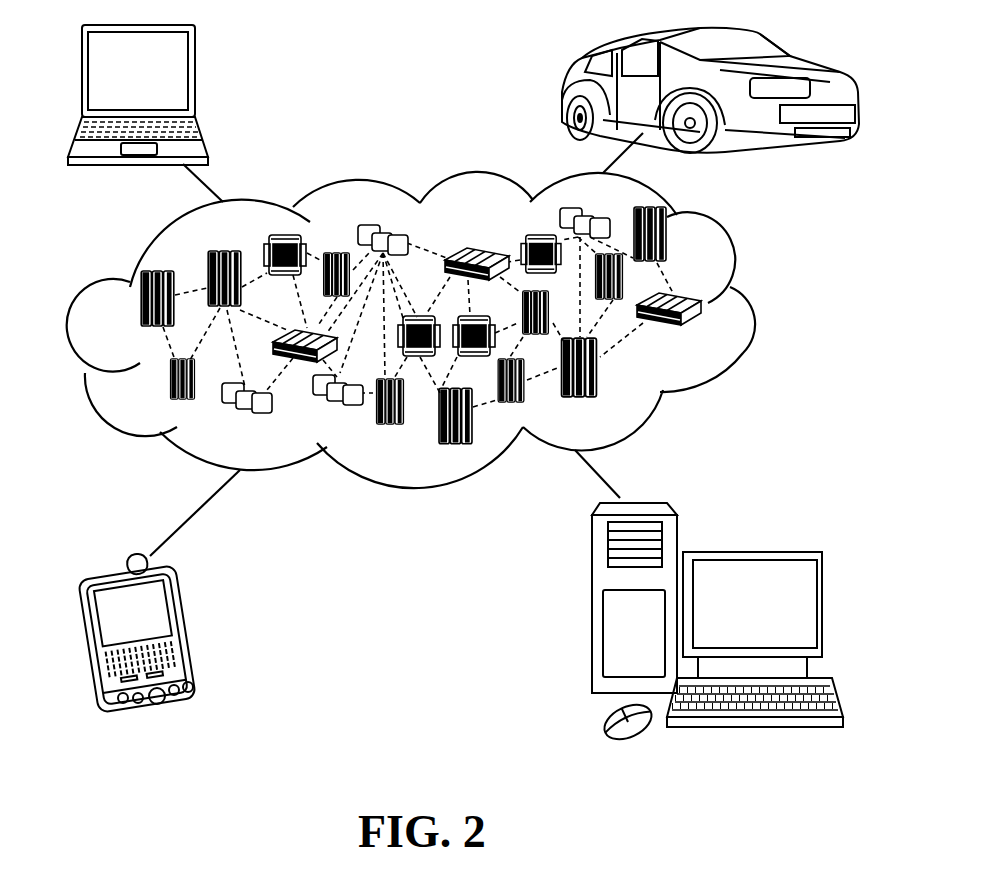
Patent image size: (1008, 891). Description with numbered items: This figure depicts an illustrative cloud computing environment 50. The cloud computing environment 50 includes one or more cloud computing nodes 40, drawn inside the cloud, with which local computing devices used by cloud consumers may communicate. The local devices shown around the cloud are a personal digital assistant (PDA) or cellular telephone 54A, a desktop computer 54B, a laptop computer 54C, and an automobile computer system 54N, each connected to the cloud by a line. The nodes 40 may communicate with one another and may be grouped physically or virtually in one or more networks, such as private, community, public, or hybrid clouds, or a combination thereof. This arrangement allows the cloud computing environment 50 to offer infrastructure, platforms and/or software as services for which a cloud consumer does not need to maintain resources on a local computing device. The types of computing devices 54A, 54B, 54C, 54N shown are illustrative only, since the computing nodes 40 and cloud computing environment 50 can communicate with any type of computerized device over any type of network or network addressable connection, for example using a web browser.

The personal digital assistant (PDA) or cellular telephone 54A is at (188, 627).
The desktop computer 54B is at (750, 552).
The laptop computer 54C is at (197, 78).
The automobile computer system 54N is at (566, 89).
The cloud computing environment 50 is at (751, 305).
The cloud computing nodes 40 is at (459, 325).